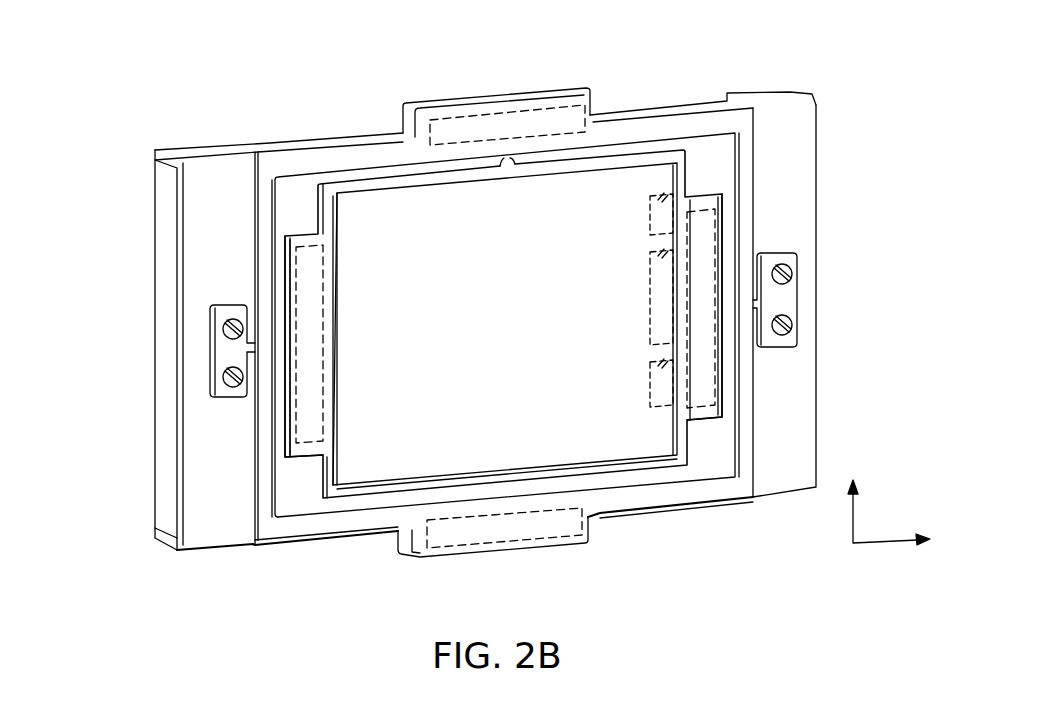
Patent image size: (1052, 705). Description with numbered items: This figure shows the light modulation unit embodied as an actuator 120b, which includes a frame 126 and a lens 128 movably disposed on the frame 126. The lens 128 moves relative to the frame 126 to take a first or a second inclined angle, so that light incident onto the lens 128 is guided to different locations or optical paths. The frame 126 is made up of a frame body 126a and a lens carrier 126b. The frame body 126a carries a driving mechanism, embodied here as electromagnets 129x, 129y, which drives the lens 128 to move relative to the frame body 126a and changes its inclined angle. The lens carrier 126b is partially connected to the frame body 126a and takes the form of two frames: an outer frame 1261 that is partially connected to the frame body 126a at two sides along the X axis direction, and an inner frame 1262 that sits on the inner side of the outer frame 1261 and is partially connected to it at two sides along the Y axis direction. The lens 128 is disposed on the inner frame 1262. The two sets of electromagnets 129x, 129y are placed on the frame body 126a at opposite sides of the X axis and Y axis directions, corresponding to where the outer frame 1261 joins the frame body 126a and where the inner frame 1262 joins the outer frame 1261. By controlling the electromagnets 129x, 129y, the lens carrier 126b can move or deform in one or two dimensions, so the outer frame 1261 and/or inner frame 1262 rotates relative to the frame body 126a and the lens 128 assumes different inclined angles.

The actuator 120b is at (197, 41).
The frame 126 is at (721, 537).
The frame body 126a is at (218, 170).
The lens carrier 126b is at (99, 201).
The outer frame 1261 is at (275, 211).
The inner frame 1262 is at (305, 242).
The lens 128 is at (607, 203).
The electromagnets 129x is at (702, 235).
The electromagnets 129y is at (517, 122).